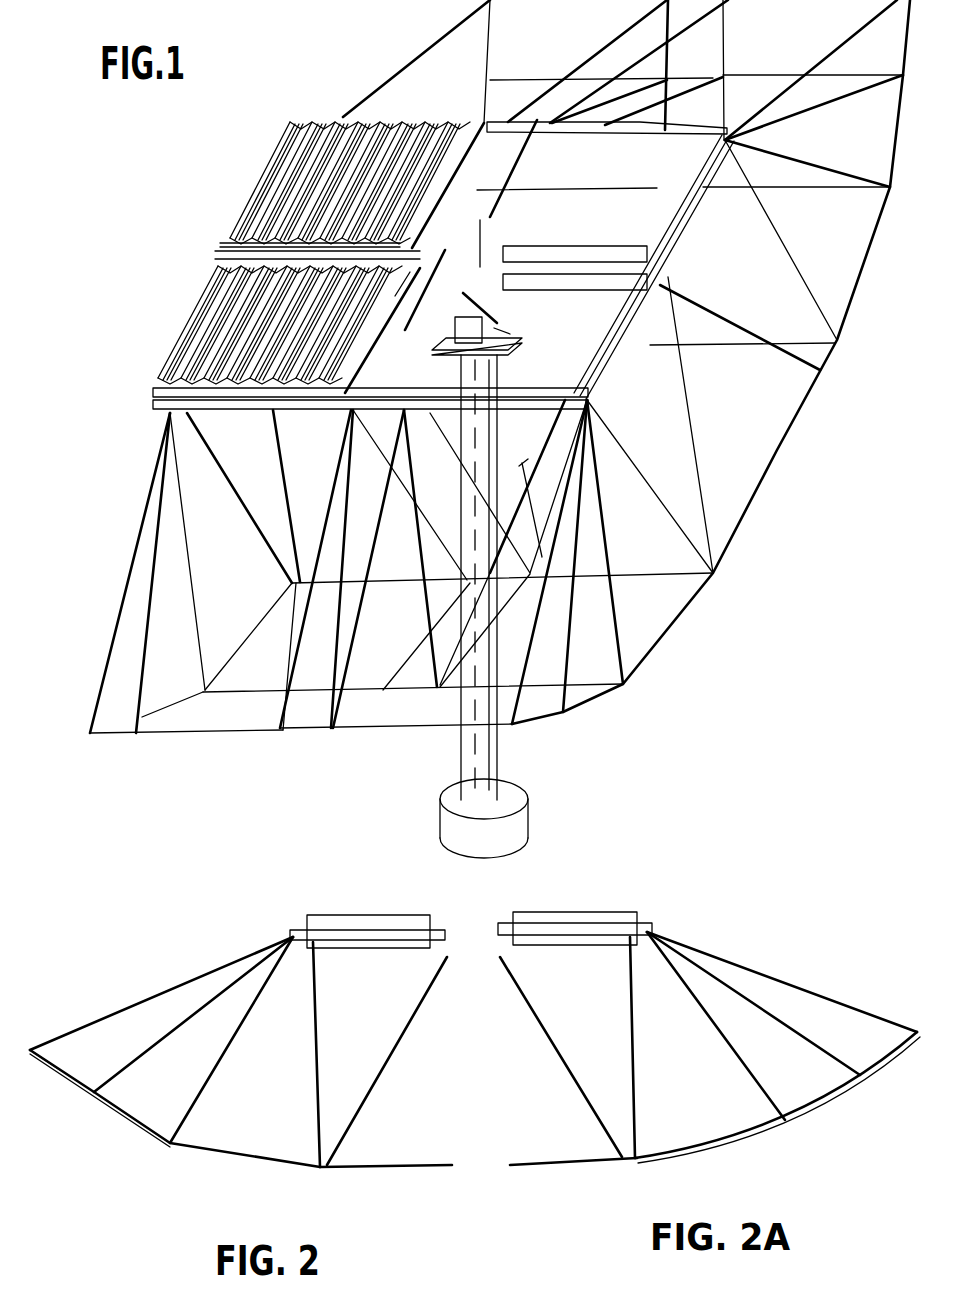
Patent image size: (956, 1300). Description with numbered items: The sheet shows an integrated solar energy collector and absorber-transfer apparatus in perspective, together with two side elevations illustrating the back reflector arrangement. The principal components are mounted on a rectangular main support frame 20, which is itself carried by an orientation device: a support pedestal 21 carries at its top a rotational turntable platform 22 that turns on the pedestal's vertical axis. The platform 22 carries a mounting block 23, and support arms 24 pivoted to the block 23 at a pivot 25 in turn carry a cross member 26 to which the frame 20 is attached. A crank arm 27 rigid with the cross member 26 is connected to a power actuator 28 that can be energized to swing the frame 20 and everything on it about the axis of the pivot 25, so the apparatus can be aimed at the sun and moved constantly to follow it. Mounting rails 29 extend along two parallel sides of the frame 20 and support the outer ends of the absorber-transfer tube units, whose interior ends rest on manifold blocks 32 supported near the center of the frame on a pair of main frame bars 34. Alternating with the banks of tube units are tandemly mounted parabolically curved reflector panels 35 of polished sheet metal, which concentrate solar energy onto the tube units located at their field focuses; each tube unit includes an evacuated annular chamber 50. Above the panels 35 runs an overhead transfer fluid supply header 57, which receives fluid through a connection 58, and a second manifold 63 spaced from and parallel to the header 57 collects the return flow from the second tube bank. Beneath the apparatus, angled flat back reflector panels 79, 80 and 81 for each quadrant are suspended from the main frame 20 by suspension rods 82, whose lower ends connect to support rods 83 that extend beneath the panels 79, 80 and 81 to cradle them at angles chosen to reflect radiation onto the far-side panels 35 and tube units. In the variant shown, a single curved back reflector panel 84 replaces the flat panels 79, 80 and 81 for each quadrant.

In FIG. 1, the main support frame 20 is at (680, 232).
In FIG. 2A, the main support frame 20 is at (580, 925).
In FIG. 1, the support pedestal 21 is at (500, 760).
In FIG. 1, the rotational turntable platform 22 is at (505, 345).
In FIG. 1, the mounting block 23 is at (450, 337).
In FIG. 1, the support arms 24 is at (490, 312).
In FIG. 1, the pivot 25 is at (505, 330).
In FIG. 1, the cross member 26 is at (495, 245).
In FIG. 1, the crank arm 27 is at (428, 300).
In FIG. 1, the power actuator 28 is at (505, 225).
In FIG. 1, the mounting rails 29 is at (338, 120).
In FIG. 1, the manifold blocks 32 is at (328, 260).
In FIG. 1, the main frame bars 34 is at (668, 250).
In FIG. 1, the parabolically curved elongated reflector panels 35 is at (350, 192).
In FIG. 2, the parabolically curved elongated reflector panels 35 is at (380, 930).
In FIG. 2A, the parabolically curved elongated reflector panels 35 is at (555, 940).
In FIG. 1, the annular chambers 50 is at (455, 200).
In FIG. 1, the transfer fluid supply header 57 is at (232, 272).
In FIG. 1, the connection 58 is at (402, 276).
In FIG. 1, the second manifold 63 is at (262, 240).
In FIG. 1, the back reflector panel 79 is at (665, 240).
In FIG. 2, the back reflector panel 79 is at (265, 1158).
In FIG. 1, the back reflector panel 80 is at (488, 105).
In FIG. 2, the back reflector panel 80 is at (160, 1125).
In FIG. 1, the back reflector panel 81 is at (225, 728).
In FIG. 2, the back reflector panel 81 is at (66, 1072).
In FIG. 1, the suspension rods 82 is at (410, 100).
In FIG. 2, the suspension rods 82 is at (205, 990).
In FIG. 2A, the suspension rods 82 is at (708, 1018).
In FIG. 2, the support rods 83 is at (350, 1170).
In FIG. 2A, the support rods 83 is at (818, 1115).
In FIG. 2A, the curved back reflector panel 84 is at (728, 1137).